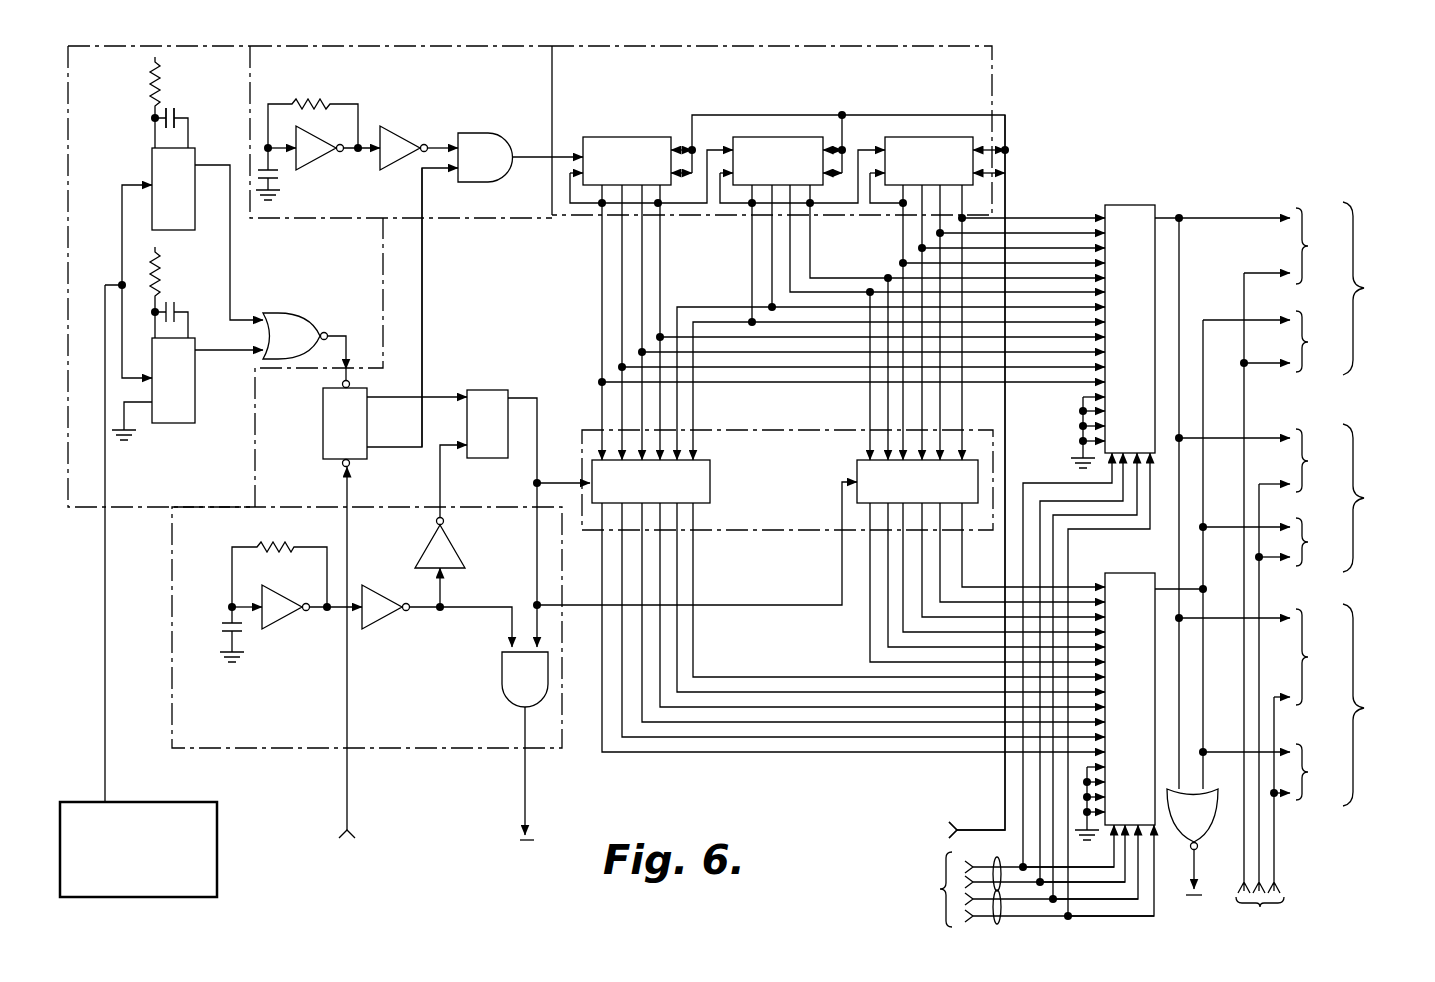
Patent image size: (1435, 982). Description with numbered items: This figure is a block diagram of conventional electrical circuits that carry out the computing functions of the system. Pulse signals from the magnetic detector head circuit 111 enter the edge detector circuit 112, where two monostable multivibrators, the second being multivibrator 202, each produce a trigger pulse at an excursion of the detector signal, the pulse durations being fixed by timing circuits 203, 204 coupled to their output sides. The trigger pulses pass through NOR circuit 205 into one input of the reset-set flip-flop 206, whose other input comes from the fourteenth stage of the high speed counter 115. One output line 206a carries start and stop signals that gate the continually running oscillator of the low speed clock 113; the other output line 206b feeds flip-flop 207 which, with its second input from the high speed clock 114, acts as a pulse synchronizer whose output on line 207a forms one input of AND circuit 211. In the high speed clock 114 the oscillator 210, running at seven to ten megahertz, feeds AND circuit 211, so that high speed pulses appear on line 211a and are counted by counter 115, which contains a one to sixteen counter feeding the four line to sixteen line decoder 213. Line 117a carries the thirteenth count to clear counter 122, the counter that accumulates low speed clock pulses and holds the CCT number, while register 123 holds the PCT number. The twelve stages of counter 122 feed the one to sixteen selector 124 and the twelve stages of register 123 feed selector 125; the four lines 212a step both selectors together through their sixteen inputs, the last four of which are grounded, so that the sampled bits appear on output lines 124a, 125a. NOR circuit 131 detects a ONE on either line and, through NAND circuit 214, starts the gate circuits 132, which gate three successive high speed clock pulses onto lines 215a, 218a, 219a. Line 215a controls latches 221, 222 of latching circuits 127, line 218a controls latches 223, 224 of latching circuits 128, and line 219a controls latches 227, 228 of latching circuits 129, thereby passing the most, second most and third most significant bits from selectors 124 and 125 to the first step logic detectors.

The magnetic detector head circuit 111 is at (217, 847).
The edge detector circuit 112 is at (225, 263).
The low speed clock 113 is at (436, 46).
The high speed clock 114 is at (367, 671).
The high speed counter 115 is at (527, 863).
The line 117a is at (1005, 788).
The counter 122 is at (755, 46).
The register 123 is at (764, 530).
The one to sixteen selector circuit 124 is at (1125, 205).
The selector output line 124a is at (1203, 218).
The one to sixteen selector circuit 125 is at (1113, 573).
The selector output line 125a is at (1167, 587).
The latching circuits 127 is at (1380, 288).
The latching circuits 128 is at (1383, 498).
The latching circuits 129 is at (1378, 705).
The NOR circuit 131 is at (1205, 838).
The gate circuits 132 is at (1261, 924).
The monostable multivibrator 202 is at (172, 423).
The timing circuit 203 is at (176, 108).
The timing circuit 204 is at (178, 302).
The NOR circuit 205 is at (288, 313).
The reset-set flip-flop circuit 206 is at (323, 445).
The output line 206a is at (422, 276).
The output line 206b is at (437, 393).
The flip-flop 207 is at (490, 390).
The output line 207a is at (525, 398).
The oscillator 210 is at (260, 545).
The AND circuit 211 is at (502, 667).
The line 211a is at (525, 797).
The lines 212a is at (1059, 879).
The four line to sixteen line decoder 213 is at (350, 676).
The NAND circuit 214 is at (1193, 919).
The line 215a is at (1250, 835).
The line 218a is at (1263, 860).
The line 219a is at (1278, 883).
The latch 221 is at (1319, 246).
The latch 222 is at (1319, 341).
The latch 223 is at (1321, 460).
The latch 224 is at (1325, 542).
The latch 227 is at (1325, 657).
The latch 228 is at (1325, 772).